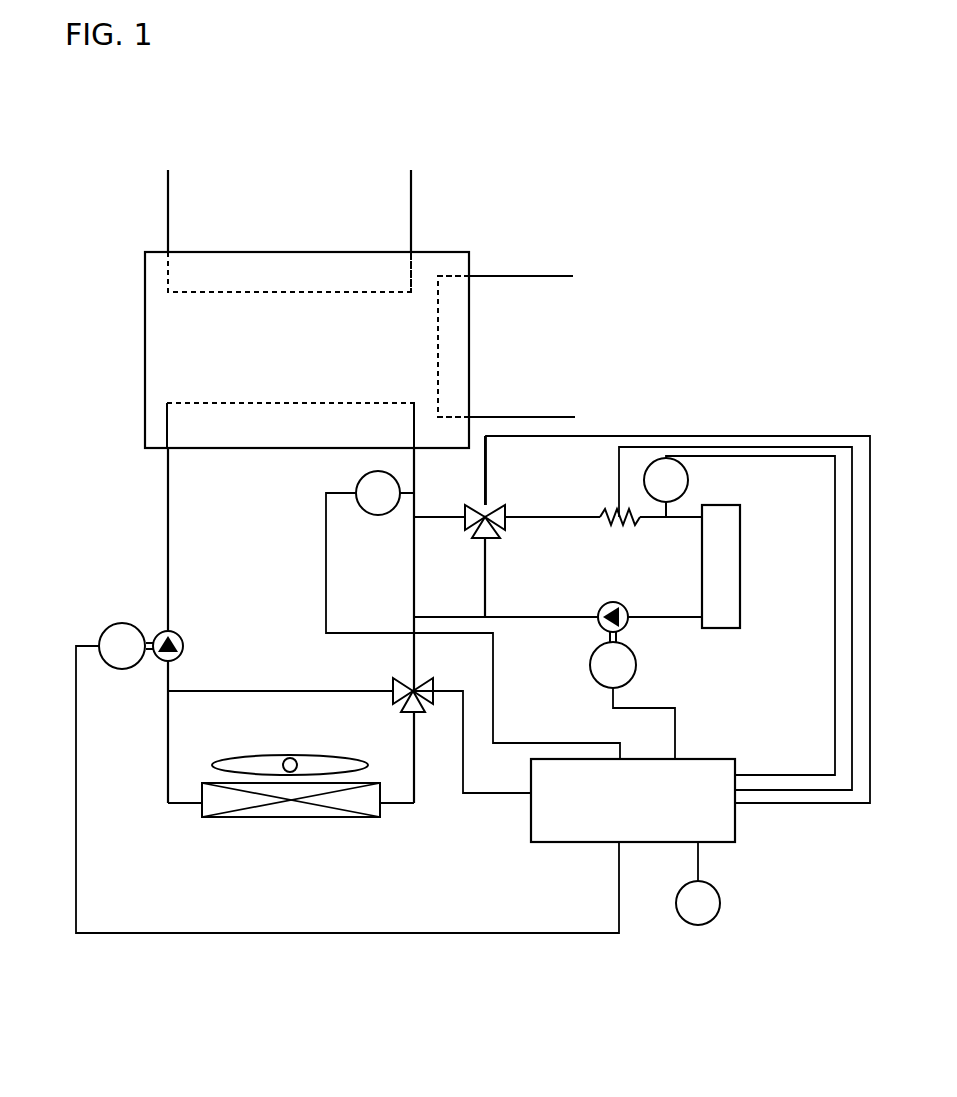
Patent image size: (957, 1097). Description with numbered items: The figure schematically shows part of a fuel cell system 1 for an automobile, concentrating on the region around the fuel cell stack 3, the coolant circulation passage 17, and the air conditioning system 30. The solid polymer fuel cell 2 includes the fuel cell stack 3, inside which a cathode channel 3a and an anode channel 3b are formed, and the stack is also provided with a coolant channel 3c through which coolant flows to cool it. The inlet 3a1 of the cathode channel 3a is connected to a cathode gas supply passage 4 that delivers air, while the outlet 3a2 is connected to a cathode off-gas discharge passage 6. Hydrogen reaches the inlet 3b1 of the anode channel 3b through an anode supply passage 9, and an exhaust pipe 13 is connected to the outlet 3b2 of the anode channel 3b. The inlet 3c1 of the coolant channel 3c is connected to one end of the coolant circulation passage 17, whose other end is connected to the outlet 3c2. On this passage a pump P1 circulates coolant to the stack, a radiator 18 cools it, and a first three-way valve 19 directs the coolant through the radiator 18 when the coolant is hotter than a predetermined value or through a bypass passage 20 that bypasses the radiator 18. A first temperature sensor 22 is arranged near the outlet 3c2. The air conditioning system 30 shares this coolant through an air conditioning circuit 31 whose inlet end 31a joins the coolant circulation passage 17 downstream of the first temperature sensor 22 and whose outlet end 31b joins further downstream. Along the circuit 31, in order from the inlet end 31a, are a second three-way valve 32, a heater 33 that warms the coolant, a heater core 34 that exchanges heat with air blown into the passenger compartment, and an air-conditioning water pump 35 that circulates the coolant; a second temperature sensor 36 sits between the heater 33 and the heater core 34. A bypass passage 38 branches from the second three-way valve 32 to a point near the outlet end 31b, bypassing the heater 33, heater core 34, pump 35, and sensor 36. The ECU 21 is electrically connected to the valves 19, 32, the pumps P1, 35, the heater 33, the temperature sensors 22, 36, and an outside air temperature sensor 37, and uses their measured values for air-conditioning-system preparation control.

The fuel cell system 1 is at (792, 944).
The solid polymer fuel cell 2 is at (345, 329).
The fuel cell stack 3 is at (469, 252).
The cathode channel 3a is at (438, 370).
The inlet of cathode channel 3a1 is at (471, 278).
The outlet of cathode channel 3a2 is at (470, 417).
The anode channel 3b is at (255, 295).
The inlet of anode channel 3b1 is at (410, 252).
The outlet of anode channel 3b2 is at (168, 252).
The coolant channel 3c is at (300, 403).
The inlet of coolant channel 3c1 is at (168, 448).
The outlet of coolant channel 3c2 is at (416, 448).
The cathode gas supply passage 4 is at (535, 274).
The cathode off-gas discharge passage 6 is at (565, 415).
The anode supply passage 9 is at (411, 200).
The exhaust pipe 13 is at (168, 202).
The coolant circulation passage 17 is at (167, 538).
The radiator 18 is at (216, 815).
The first three-way valve 19 is at (392, 688).
The bypass passage 20 is at (295, 690).
The ECU (Electronic Control Unit) 21 is at (713, 758).
The first temperature sensor 22 is at (358, 486).
The air conditioning system 30 is at (580, 565).
The air conditioning circuit 31 is at (560, 519).
The inlet end of air conditioning circuit 31a is at (419, 519).
The outlet end of air conditioning circuit 31b is at (414, 617).
The second three-way valve 32 is at (488, 514).
The heater 33 is at (632, 520).
The heater core 34 is at (742, 556).
The air-conditioning water pump 35 is at (600, 630).
The second temperature sensor 36 is at (690, 480).
The outside air temperature sensor 37 is at (718, 891).
The bypass passage 38 is at (489, 594).
The pump P1 is at (166, 640).